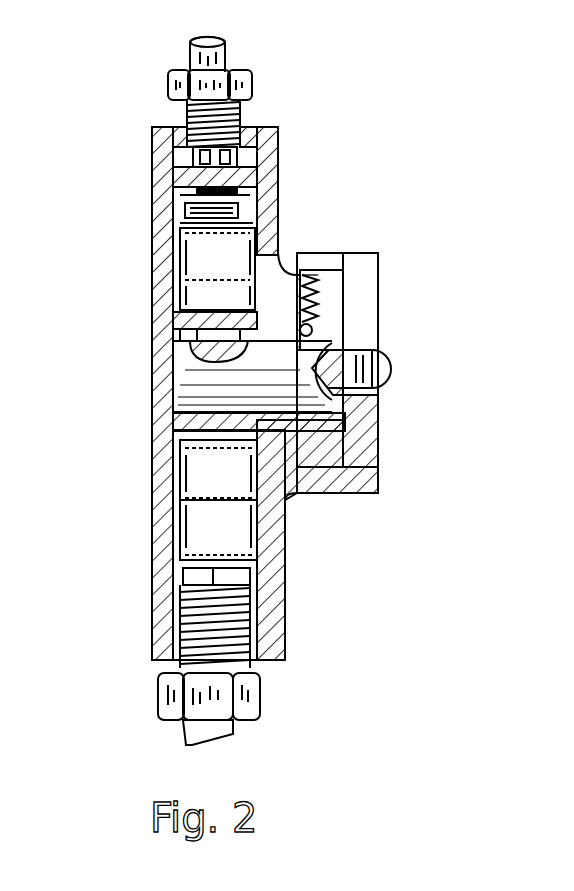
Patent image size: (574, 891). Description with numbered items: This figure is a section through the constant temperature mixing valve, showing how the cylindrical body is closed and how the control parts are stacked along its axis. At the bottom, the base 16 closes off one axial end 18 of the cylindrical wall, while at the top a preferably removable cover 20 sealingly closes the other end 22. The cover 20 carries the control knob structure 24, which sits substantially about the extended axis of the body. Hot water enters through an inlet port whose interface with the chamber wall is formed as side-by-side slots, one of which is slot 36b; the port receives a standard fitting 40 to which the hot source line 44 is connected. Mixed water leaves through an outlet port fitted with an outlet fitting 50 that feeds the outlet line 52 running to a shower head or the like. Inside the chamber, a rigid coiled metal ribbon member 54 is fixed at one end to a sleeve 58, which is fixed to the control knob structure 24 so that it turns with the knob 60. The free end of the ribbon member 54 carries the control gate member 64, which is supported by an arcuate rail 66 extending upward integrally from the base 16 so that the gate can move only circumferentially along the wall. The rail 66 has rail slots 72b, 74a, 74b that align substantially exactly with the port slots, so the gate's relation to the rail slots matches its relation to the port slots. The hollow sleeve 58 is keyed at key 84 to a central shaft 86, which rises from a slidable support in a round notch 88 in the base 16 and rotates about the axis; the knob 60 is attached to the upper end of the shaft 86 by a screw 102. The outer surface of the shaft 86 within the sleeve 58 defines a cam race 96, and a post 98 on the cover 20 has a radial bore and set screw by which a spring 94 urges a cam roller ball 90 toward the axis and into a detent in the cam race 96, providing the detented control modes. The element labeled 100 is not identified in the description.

The base 16 is at (172, 390).
The axial end 18 is at (172, 568).
The cover 20 is at (288, 520).
The other end 22 is at (287, 568).
The control knob structure 24 is at (395, 342).
The slot 36b is at (265, 150).
The fitting 40 is at (245, 97).
The hot source line 44 is at (228, 55).
The outlet fitting 50 is at (262, 702).
The outlet line 52 is at (233, 738).
The coiled metal ribbon member 54 is at (172, 270).
The sleeve 58 is at (172, 330).
The knob 60 is at (383, 483).
The control gate member 64 is at (270, 178).
The arcuate rail 66 is at (172, 190).
The rail slot 72b is at (172, 150).
The rail slot 74a is at (172, 208).
The rail slot 74b is at (172, 230).
The key 84 is at (172, 357).
The central shaft 86 is at (172, 420).
The round notch 88 is at (172, 445).
The cam roller ball 90 is at (380, 302).
The spring 94 is at (380, 270).
The cam race 96 is at (382, 420).
The post 98 is at (382, 455).
The boss 100 is at (350, 262).
The screw 102 is at (385, 378).